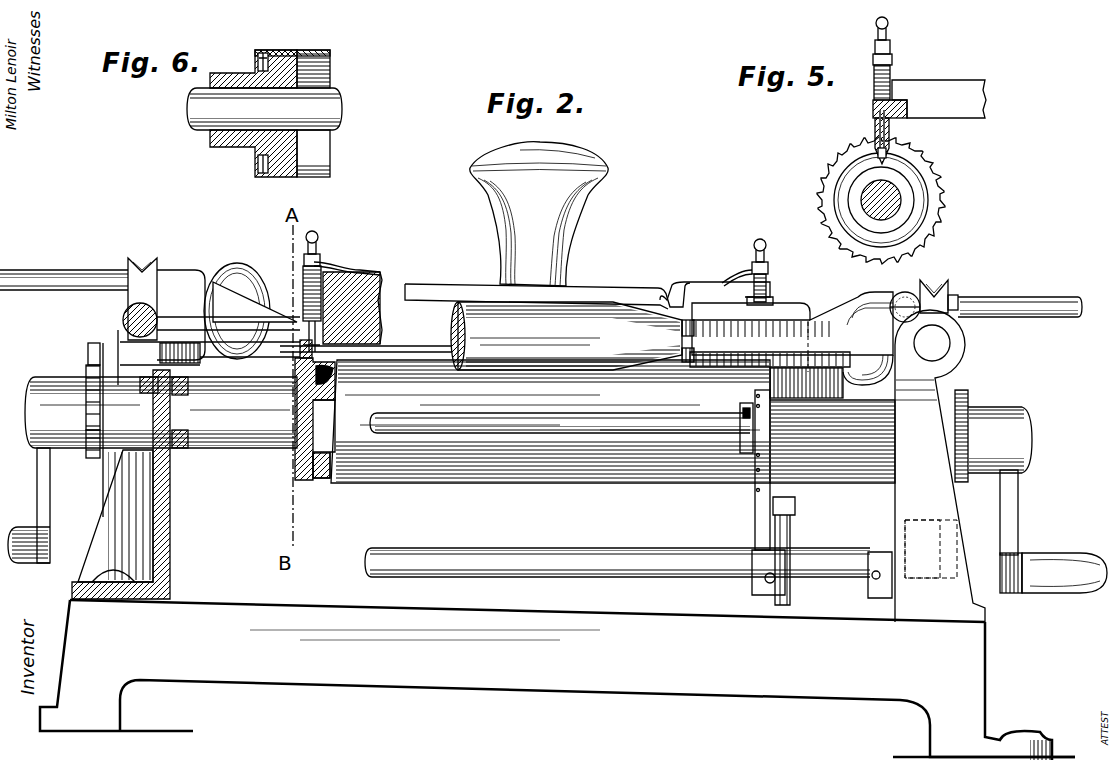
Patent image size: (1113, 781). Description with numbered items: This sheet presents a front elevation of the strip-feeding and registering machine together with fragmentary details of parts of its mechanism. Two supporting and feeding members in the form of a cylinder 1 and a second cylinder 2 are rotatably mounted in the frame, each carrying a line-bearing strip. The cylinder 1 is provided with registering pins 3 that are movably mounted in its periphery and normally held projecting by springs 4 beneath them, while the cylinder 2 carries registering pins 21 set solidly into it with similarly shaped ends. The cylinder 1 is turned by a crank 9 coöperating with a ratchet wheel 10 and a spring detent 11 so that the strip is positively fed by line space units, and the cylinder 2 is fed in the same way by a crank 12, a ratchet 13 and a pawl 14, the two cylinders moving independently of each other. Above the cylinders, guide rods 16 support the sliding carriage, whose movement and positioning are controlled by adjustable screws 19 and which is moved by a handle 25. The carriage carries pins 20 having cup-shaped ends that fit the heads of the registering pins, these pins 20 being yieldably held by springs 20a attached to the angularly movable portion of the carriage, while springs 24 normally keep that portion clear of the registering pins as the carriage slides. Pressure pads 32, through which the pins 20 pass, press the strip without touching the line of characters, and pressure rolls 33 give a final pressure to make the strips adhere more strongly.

In FIG. 6, the cylinder 1 is at (297, 50).
In FIG. 5, the cylinder 1 is at (926, 182).
In FIG. 2, the cylinder 2 is at (358, 470).
In FIG. 6, the registering pins 3 is at (262, 174).
In FIG. 5, the registering pins 3 is at (922, 160).
In FIG. 6, the springs 4 is at (257, 61).
In FIG. 5, the springs 4 is at (875, 152).
In FIG. 2, the crank 9 is at (40, 481).
In FIG. 2, the ratchet wheel 10 is at (88, 372).
In FIG. 2, the spring detent 11 is at (88, 345).
In FIG. 2, the crank 12 is at (1020, 505).
In FIG. 2, the ratchet 13 is at (968, 391).
In FIG. 2, the pawl 14 is at (962, 492).
In FIG. 2, the guide rods 16 is at (123, 318).
In FIG. 2, the adjustable screws 19 is at (905, 292).
In FIG. 5, the pins 20 is at (875, 122).
In FIG. 2, the pins 20 is at (765, 290).
In FIG. 2, the springs 20a is at (325, 268).
In FIG. 2, the registering pins 21 is at (305, 481).
In FIG. 5, the springs 24 is at (895, 81).
In FIG. 2, the springs 24 is at (355, 270).
In FIG. 2, the handle 25 is at (539, 214).
In FIG. 2, the pressure pads 32 is at (335, 320).
In FIG. 2, the pressure rolls 33 is at (739, 408).